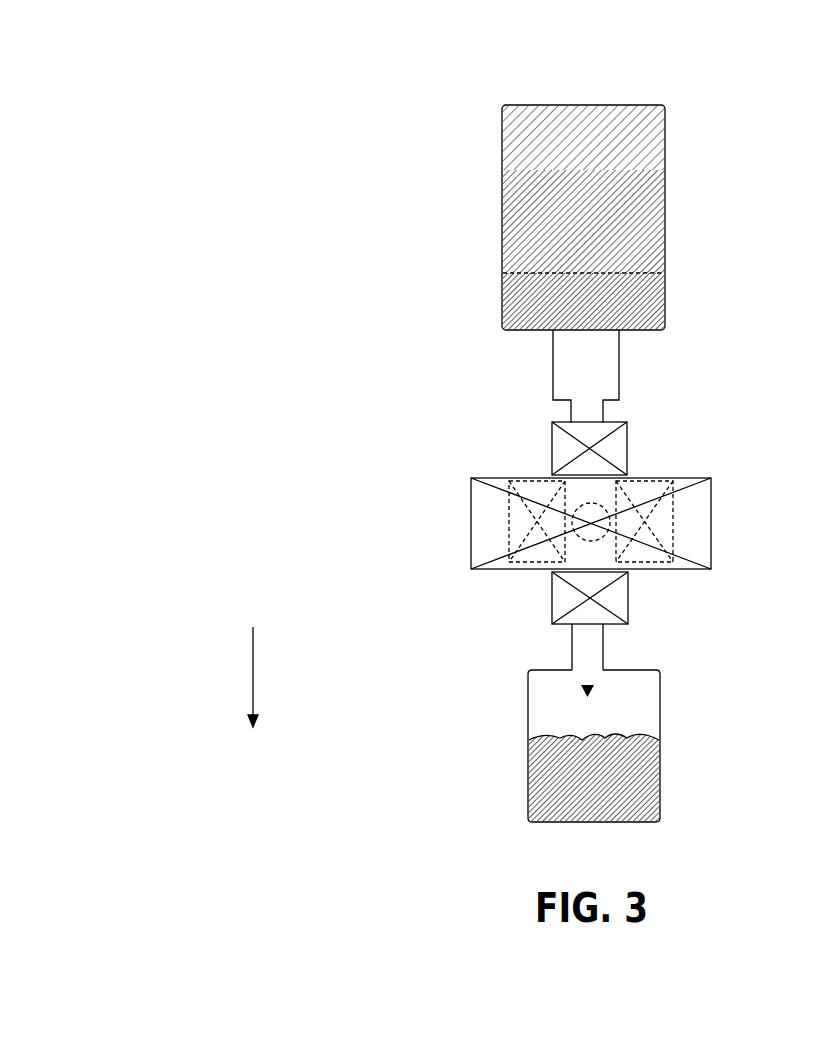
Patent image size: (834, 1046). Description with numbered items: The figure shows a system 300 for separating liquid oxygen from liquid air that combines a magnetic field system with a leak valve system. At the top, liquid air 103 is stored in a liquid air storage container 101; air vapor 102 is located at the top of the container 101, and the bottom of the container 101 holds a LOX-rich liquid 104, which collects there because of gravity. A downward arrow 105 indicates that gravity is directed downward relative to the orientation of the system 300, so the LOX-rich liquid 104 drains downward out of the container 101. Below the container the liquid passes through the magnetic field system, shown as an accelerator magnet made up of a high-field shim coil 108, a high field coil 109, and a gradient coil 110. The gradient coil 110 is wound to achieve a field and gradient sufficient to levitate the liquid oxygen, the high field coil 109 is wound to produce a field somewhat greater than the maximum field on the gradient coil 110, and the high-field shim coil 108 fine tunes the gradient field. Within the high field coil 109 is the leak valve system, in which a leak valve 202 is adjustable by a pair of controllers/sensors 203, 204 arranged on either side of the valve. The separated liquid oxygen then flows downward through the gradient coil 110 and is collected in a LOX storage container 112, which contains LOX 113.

The system 300 is at (370, 68).
The liquid air storage container 101 is at (501, 160).
The air vapor 102 is at (608, 140).
The liquid air 103 is at (608, 218).
The LOX-rich liquid 104 is at (608, 318).
The downward arrow 105 is at (213, 677).
The high-field shim coil 108 is at (552, 453).
The high field coil 109 is at (471, 510).
The gradient coil 110 is at (552, 608).
The LOX storage container 112 is at (528, 735).
The LOX 113 is at (617, 800).
The leak valve 202 is at (594, 500).
The controller/sensor 203 is at (509, 507).
The controller/sensor 204 is at (673, 505).